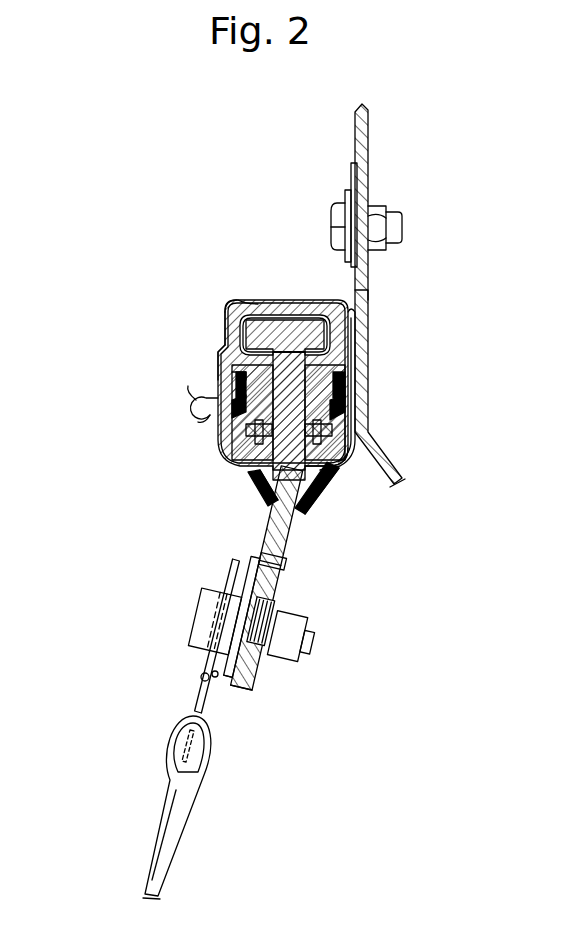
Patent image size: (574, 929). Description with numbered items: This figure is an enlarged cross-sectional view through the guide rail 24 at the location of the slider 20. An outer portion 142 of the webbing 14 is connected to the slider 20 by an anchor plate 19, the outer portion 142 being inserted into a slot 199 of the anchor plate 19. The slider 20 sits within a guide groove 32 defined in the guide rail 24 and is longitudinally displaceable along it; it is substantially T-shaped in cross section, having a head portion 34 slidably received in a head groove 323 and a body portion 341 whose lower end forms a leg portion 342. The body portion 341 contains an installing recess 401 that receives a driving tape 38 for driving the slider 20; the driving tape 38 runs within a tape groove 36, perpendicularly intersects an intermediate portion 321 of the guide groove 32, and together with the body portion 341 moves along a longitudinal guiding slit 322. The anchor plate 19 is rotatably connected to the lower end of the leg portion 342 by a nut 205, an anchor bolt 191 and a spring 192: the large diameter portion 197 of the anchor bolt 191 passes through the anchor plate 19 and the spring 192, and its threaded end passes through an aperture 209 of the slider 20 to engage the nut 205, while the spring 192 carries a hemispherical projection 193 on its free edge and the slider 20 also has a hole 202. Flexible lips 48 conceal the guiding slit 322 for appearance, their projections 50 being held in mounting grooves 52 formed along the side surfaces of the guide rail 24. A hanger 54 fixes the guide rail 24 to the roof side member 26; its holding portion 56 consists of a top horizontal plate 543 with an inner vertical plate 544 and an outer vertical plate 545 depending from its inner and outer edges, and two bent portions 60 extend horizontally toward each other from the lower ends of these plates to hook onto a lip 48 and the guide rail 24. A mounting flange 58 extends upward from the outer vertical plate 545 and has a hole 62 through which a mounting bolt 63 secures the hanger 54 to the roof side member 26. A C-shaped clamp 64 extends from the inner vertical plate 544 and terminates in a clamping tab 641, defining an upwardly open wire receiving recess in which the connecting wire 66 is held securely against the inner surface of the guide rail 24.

The webbing 14 is at (156, 895).
The anchor plate 19 is at (198, 704).
The slider 20 is at (288, 563).
The guide rail 24 is at (252, 312).
The roof side member 26 is at (356, 118).
The guide groove 32 is at (284, 317).
The head portion 34 is at (310, 312).
The tape groove 36 is at (232, 422).
The driving tape 38 is at (330, 466).
The flexible lip 48 is at (252, 490).
The projection 50 is at (352, 370).
The mounting groove 52 is at (342, 381).
The hanger 54 is at (212, 300).
The holding portion 56 is at (227, 356).
The mounting flange 58 is at (351, 170).
The bent portion 60 is at (248, 472).
The hole 62 is at (370, 216).
The mounting bolt 63 is at (332, 218).
The clamp 64 is at (190, 406).
The connecting wire 66 is at (200, 430).
The outer portion 142 is at (170, 832).
The anchor bolt 191 is at (200, 640).
The spring 192 is at (230, 574).
The hemispherical projection 193 is at (288, 577).
The large diameter portion 197 is at (228, 688).
The slot 199 is at (201, 690).
The hole 202 is at (303, 622).
The nut 205 is at (285, 662).
The aperture 209 is at (263, 685).
The intermediate portion 321 is at (230, 373).
The guiding slit 322 is at (266, 494).
The head groove 323 is at (227, 299).
The body portion 341 is at (330, 412).
The leg portion 342 is at (283, 597).
The installing recess 401 is at (290, 512).
The top horizontal plate 543 is at (258, 298).
The inner vertical plate 544 is at (224, 330).
The outer vertical plate 545 is at (370, 300).
The clamping tab 641 is at (188, 394).